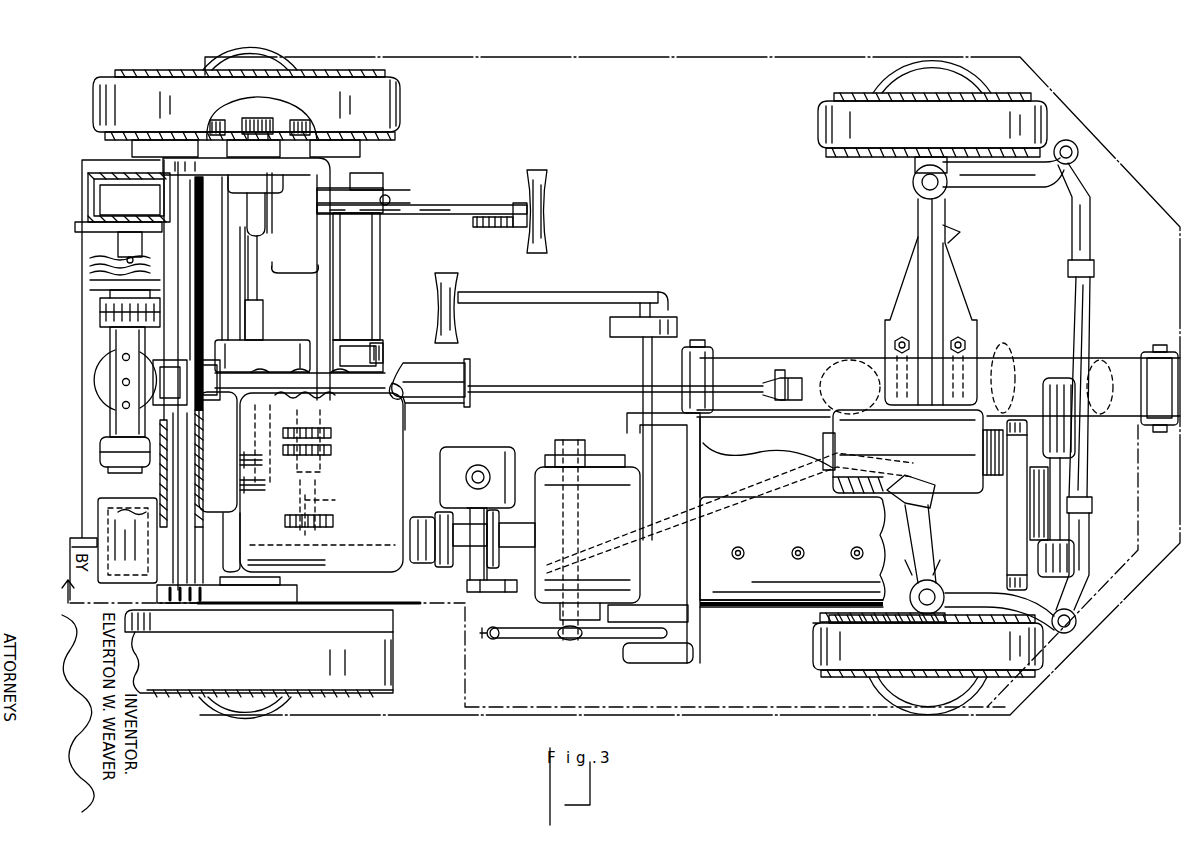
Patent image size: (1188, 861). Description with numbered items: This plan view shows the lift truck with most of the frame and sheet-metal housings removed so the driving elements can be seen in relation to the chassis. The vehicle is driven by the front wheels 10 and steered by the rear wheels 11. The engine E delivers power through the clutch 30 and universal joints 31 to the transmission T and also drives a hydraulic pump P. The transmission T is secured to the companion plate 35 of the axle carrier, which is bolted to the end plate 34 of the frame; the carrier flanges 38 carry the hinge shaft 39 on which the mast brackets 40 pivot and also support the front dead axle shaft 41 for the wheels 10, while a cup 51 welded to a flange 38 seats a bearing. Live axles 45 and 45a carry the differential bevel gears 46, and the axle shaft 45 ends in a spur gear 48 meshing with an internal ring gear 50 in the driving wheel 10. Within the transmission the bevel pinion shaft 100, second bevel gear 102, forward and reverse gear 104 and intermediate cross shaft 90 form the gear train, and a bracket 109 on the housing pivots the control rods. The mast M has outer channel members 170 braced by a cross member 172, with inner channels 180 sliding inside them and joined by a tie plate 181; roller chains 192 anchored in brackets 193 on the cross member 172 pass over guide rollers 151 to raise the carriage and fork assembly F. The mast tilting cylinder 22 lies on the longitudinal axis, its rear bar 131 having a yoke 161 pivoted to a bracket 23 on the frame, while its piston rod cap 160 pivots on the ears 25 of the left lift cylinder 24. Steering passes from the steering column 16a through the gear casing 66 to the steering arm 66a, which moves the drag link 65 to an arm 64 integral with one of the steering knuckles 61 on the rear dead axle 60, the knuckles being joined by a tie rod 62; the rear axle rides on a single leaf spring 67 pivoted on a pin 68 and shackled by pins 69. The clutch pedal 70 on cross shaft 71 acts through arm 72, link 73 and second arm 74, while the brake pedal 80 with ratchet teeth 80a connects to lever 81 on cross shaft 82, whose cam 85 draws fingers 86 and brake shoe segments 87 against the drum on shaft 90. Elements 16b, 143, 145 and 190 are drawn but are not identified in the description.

The driving wheels 10 is at (398, 109).
The rear wheels 11 is at (800, 640).
The steering column 16a is at (468, 472).
The bolt 16b is at (472, 484).
The mast tilting cylinder 22 is at (460, 364).
The bracket 23 is at (796, 384).
The left cylinder 24 is at (95, 372).
The ears 25 is at (172, 348).
The clutch 30 is at (618, 507).
The universal joints 31 is at (440, 568).
The end plate 34 is at (345, 290).
The companion plate 35 is at (320, 307).
The flanges 38 is at (272, 206).
The hinge shaft 39 is at (192, 462).
The brackets 40 is at (178, 512).
The front dead axle shaft 41 is at (258, 250).
The live axle 45 is at (265, 222).
The live axle 45a is at (262, 552).
The bevel gears 46 is at (258, 484).
The spur gear 48 is at (254, 120).
The internal ring gear 50 is at (214, 122).
The cup 51 is at (243, 203).
The dead axle 60 is at (950, 300).
The steering knuckles 61 is at (1000, 190).
The tie rod 62 is at (1090, 292).
The arm 64 is at (915, 550).
The drag link 65 is at (798, 457).
The gear casing 66 is at (500, 448).
The steering arm 66a is at (494, 592).
The leaf spring 67 is at (996, 362).
The pin 68 is at (1150, 372).
The pin 69 is at (705, 356).
The clutch pedal 70 is at (530, 295).
The cross shaft 71 is at (640, 355).
The arm 72 is at (612, 636).
The link 73 is at (495, 637).
The second arm 74 is at (548, 639).
The brake pedal 80 is at (440, 207).
The ratchet teeth 80a is at (494, 224).
The lever 81 is at (345, 185).
The cross shaft 82 is at (385, 228).
The cam 85 is at (388, 357).
The fingers 86 is at (390, 347).
The brake shoe segments 87 is at (265, 352).
The intermediate cross shaft 90 is at (276, 400).
The bevel pinion shaft 100 is at (340, 516).
The second bevel gear 102 is at (318, 492).
The forward and reverse gear 104 is at (335, 447).
The bracket 109 is at (340, 388).
The bar 131 is at (536, 384).
The hub 143 is at (110, 418).
The pin 145 is at (124, 381).
The guide rollers 151 is at (102, 455).
The apertured cap 160 is at (190, 413).
The yoke 161 is at (778, 368).
The outer channel members 170 is at (95, 176).
The second cross member 172 is at (160, 266).
The inner channels 180 is at (100, 196).
The tie plate 181 is at (100, 495).
The pin 190 is at (80, 226).
The roller chains 192 is at (100, 310).
The brackets 193 is at (190, 320).
The engine E is at (772, 527).
The carriage and fork assembly F is at (80, 247).
The mast M is at (80, 323).
The hydraulic pump P is at (1095, 542).
The transmission T is at (418, 437).